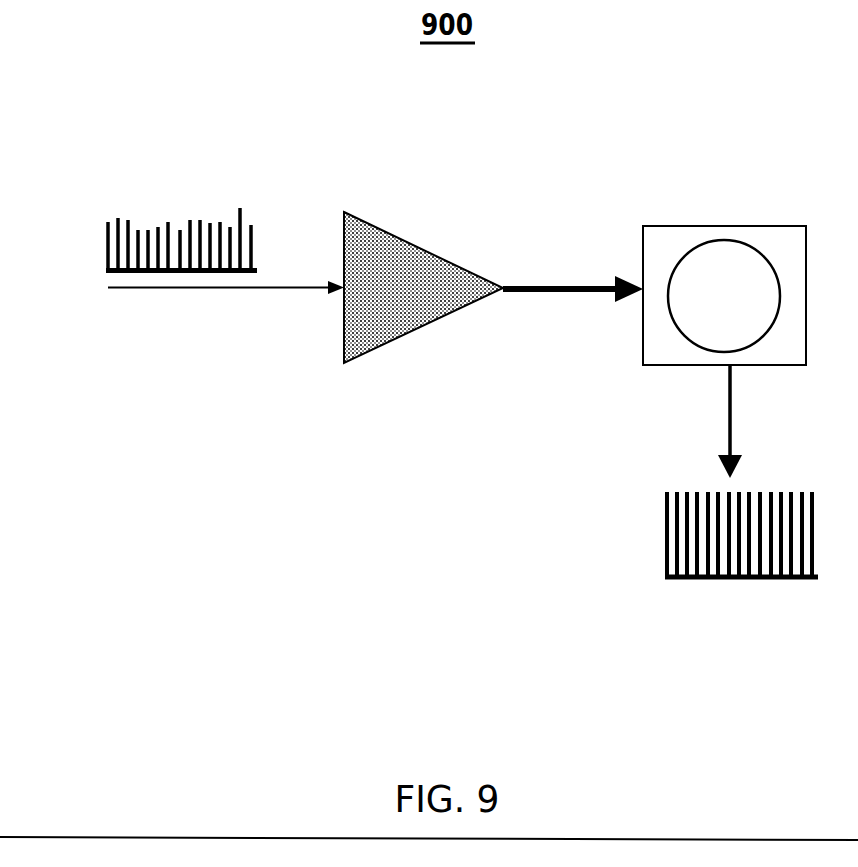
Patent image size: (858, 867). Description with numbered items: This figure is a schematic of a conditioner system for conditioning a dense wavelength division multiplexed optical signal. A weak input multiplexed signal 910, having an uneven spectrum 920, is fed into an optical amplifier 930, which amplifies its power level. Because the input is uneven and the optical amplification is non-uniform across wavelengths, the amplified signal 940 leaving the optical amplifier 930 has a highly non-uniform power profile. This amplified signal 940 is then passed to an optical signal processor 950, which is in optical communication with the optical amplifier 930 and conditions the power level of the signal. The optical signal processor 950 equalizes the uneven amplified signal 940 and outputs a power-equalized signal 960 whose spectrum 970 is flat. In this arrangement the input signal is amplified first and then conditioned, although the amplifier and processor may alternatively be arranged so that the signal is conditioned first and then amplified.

The input multiplexed signal 910 is at (147, 288).
The uneven spectrum 920 is at (220, 253).
The optical amplifier 930 is at (357, 313).
The amplified signal 940 is at (540, 291).
The optical signal processor 950 is at (705, 315).
The power-equalized signal 960 is at (728, 415).
The spectrum 970 is at (718, 528).